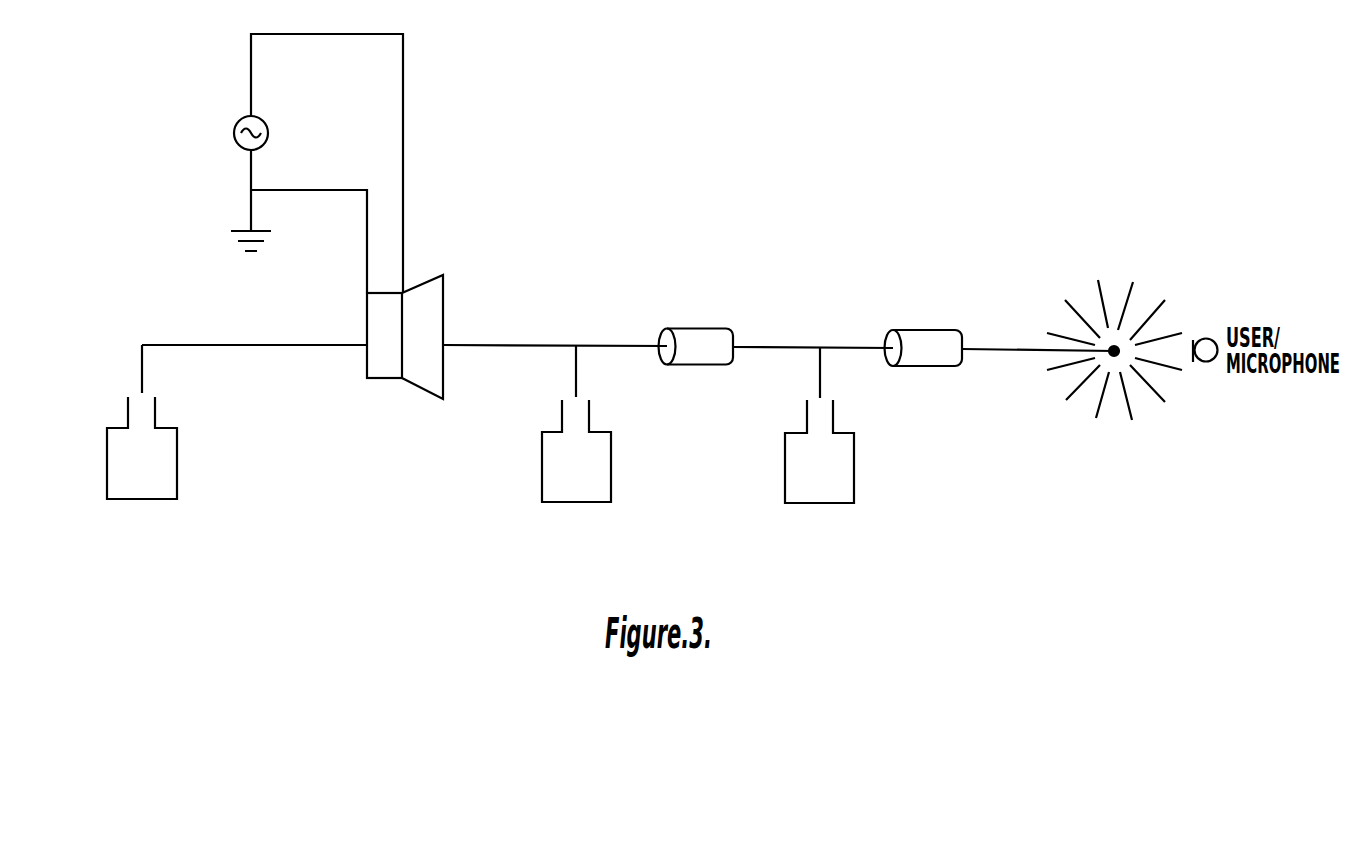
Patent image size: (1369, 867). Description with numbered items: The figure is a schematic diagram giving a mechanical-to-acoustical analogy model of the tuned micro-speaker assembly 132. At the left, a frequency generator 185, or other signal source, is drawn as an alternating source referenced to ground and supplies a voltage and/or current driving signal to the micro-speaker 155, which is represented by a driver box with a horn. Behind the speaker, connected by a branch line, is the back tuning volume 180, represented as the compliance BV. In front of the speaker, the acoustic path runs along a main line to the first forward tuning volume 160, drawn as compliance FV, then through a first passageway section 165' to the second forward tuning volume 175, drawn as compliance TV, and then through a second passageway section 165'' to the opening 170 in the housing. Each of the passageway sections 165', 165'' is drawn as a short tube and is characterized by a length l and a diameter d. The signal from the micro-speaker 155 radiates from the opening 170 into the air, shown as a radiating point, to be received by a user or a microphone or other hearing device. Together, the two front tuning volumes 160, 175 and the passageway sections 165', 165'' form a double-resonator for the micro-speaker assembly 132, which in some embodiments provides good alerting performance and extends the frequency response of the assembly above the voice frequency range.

The micro-speaker assembly 132 is at (782, 152).
The frequency generator 185 is at (196, 124).
The micro-speaker 155 is at (342, 359).
The back tuning volume 180 is at (177, 470).
The first forward tuning volume 160 is at (541, 487).
The second forward tuning volume 175 is at (855, 488).
The first section of passageway 165' is at (696, 373).
The second section of passageway 165'' is at (932, 380).
The opening 170 is at (1110, 330).